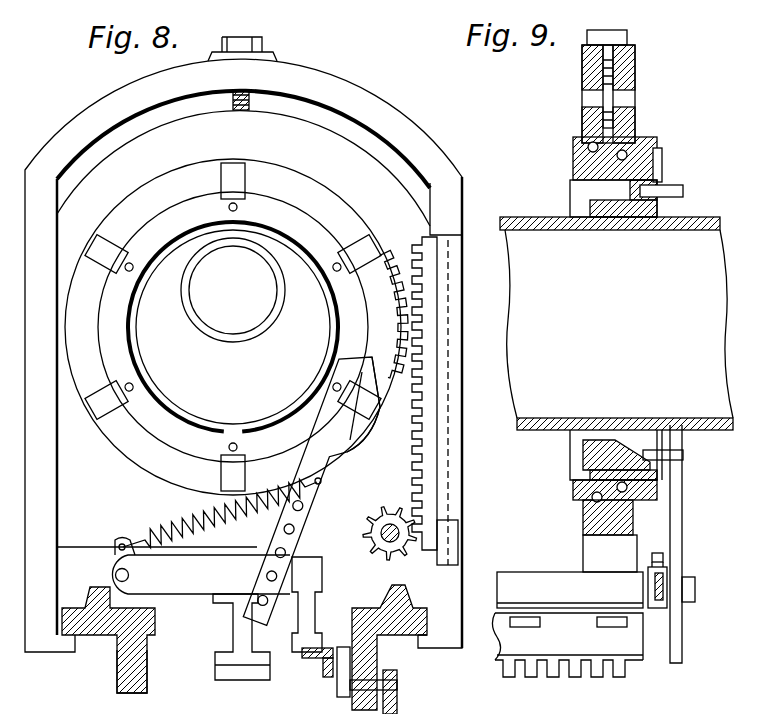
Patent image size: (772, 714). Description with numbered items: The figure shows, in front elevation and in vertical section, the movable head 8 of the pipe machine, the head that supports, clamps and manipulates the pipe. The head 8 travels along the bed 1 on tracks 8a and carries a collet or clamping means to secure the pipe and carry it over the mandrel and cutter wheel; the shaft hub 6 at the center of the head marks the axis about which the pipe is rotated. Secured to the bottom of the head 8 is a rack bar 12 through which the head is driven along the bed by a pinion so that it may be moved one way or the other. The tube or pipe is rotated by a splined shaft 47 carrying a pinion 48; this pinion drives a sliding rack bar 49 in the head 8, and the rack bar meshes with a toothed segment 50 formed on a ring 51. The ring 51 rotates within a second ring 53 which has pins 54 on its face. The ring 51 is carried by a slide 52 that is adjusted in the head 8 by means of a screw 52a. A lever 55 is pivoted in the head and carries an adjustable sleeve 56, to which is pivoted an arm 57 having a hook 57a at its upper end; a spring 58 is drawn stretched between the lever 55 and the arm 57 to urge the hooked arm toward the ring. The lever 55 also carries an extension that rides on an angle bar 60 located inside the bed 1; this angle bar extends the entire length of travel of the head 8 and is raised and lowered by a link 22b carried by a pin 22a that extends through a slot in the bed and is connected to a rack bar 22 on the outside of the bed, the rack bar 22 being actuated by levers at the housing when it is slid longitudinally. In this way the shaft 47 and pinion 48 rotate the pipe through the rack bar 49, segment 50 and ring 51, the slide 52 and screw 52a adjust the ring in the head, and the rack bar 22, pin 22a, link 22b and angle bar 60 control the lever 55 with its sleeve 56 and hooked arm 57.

In FIG. 8, the bed 1 is at (117, 685).
In FIG. 8, the shaft hub 6 is at (185, 311).
In FIG. 8, the movable head 8 is at (447, 160).
In FIG. 9, the movable head 8 is at (635, 67).
In FIG. 8, the tracks 8a is at (88, 605).
In FIG. 8, the rack bar 12 is at (235, 622).
In FIG. 9, the rack bar 12 is at (635, 632).
In FIG. 8, the rack bar 22 is at (398, 676).
In FIG. 8, the pin 22a is at (398, 685).
In FIG. 8, the link 22b is at (343, 692).
In FIG. 8, the splined shaft 47 is at (400, 533).
In FIG. 8, the pinion 48 is at (393, 514).
In FIG. 8, the sliding rack bar 49 is at (418, 407).
In FIG. 8, the toothed segment 50 is at (405, 308).
In FIG. 8, the ring 51 is at (328, 203).
In FIG. 8, the slide 52 is at (105, 172).
In FIG. 8, the screw 52a is at (249, 97).
In FIG. 8, the second ring 53 is at (318, 243).
In FIG. 9, the second ring 53 is at (660, 174).
In FIG. 8, the pins 54 is at (236, 204).
In FIG. 9, the pins 54 is at (683, 190).
In FIG. 8, the lever 55 is at (201, 566).
In FIG. 9, the lever 55 is at (668, 580).
In FIG. 8, the adjustable sleeve 56 is at (285, 583).
In FIG. 9, the adjustable sleeve 56 is at (672, 608).
In FIG. 8, the arm 57 is at (330, 463).
In FIG. 9, the arm 57 is at (683, 504).
In FIG. 8, the hook 57a is at (361, 393).
In FIG. 8, the spring 58 is at (160, 518).
In FIG. 8, the angle bar 60 is at (335, 667).